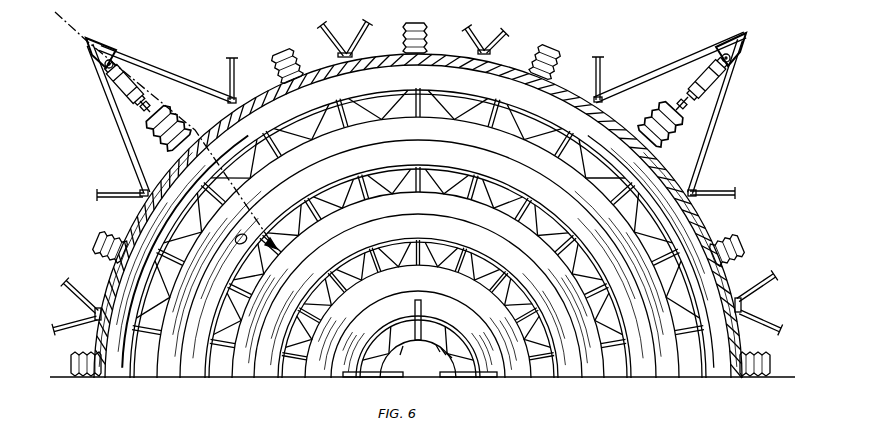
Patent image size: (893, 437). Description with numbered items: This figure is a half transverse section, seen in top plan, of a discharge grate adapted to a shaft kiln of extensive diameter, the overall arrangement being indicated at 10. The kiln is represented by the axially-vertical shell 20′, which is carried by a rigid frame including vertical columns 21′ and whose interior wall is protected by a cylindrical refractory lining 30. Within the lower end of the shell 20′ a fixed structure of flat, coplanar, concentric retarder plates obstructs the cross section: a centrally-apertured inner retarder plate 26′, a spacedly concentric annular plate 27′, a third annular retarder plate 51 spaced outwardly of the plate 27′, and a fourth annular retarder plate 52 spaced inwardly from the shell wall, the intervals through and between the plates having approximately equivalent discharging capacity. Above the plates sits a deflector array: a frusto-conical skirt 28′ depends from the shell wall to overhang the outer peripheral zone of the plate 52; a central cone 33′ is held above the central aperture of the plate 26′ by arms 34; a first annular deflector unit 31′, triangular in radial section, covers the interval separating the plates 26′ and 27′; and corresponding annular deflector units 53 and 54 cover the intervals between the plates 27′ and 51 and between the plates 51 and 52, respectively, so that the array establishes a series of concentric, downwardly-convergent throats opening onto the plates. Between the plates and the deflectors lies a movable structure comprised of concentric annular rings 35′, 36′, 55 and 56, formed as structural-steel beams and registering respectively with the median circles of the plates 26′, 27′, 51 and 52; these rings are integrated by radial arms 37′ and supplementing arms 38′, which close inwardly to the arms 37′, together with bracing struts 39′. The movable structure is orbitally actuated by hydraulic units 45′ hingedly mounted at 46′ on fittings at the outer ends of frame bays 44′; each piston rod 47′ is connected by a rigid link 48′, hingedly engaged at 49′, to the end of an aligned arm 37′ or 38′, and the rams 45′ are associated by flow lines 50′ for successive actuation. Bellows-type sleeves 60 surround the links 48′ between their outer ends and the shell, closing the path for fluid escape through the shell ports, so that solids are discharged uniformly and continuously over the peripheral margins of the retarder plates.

The assembly 10 is at (62, 24).
The shell 20′ is at (136, 224).
The vertical columns 21′ is at (142, 190).
The retarder plate 26′ is at (469, 356).
The annular plate 27′ is at (533, 300).
The frusto-conical skirt 28′ is at (415, 217).
The refractory lining 30 is at (102, 379).
The first annular deflector unit 31′ is at (418, 321).
The central cone 33′ is at (426, 349).
The arms 34 is at (427, 298).
The annular ring 35′ is at (436, 328).
The annular ring 36′ is at (490, 268).
The radial arms 37′ is at (424, 108).
The supplementing arms 38′ is at (508, 140).
The bracing struts 39′ is at (380, 103).
The frame bays 44′ is at (118, 192).
The hydraulic units 45′ is at (110, 97).
The hinge mounting 46′ is at (112, 60).
The piston rods 47′ is at (160, 70).
The rigid links 48′ is at (148, 106).
The hinge connection 49′ is at (155, 118).
The flow lines 50′ is at (128, 62).
The third annular retarder plate 51 is at (588, 262).
The fourth annular retarder plate 52 is at (624, 187).
The annular deflector unit 53 is at (418, 285).
The annular deflector unit 54 is at (418, 247).
The annular ring 55 is at (530, 203).
The annular ring 56 is at (575, 142).
The bellows-type sleeves 60 is at (430, 38).